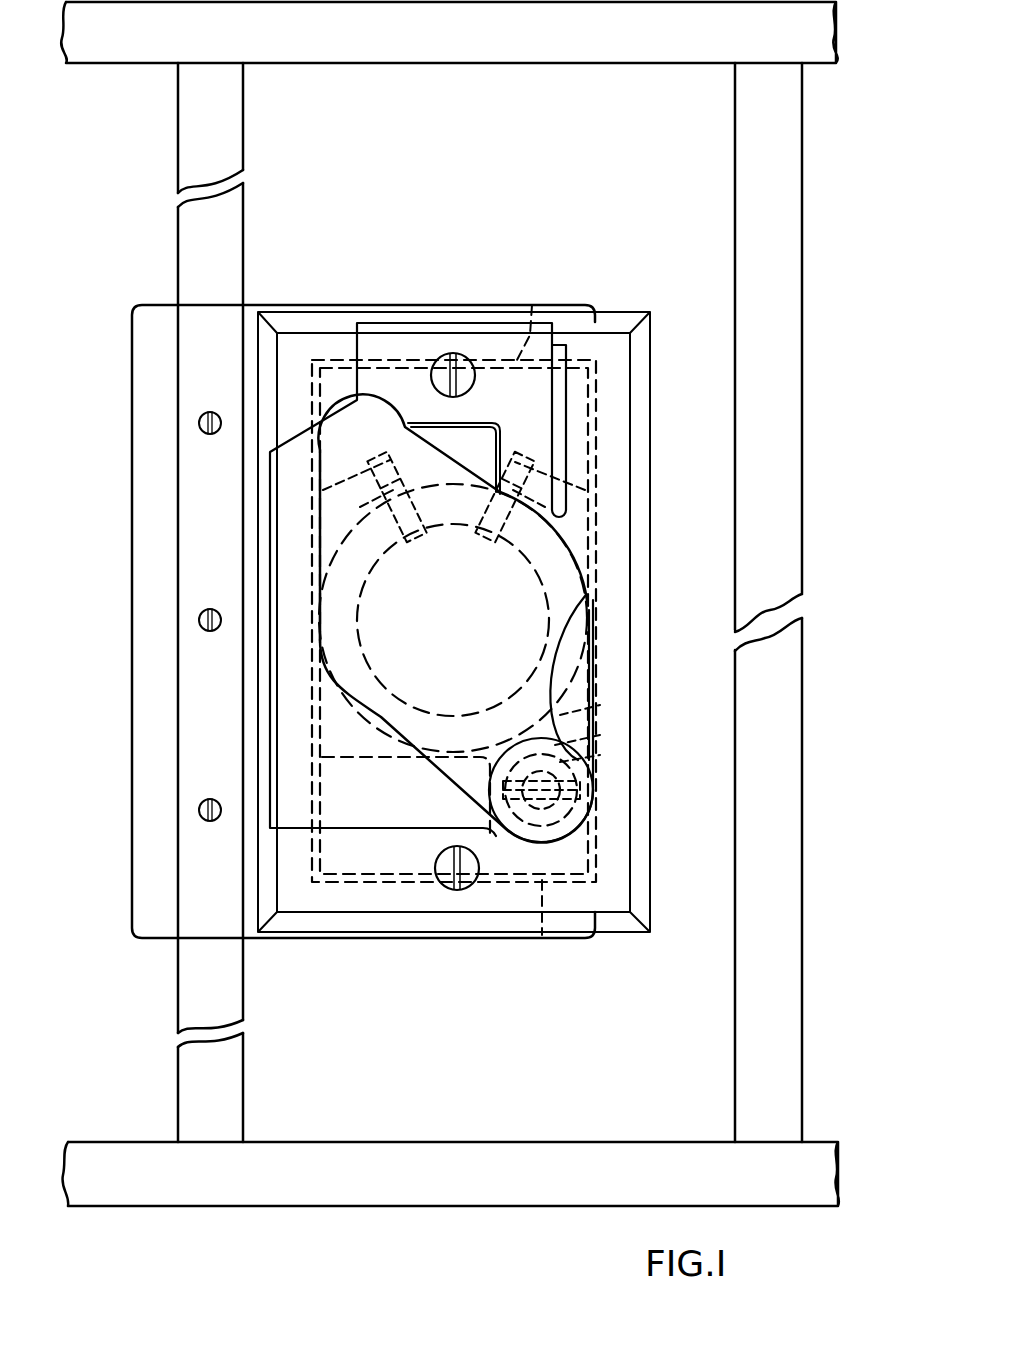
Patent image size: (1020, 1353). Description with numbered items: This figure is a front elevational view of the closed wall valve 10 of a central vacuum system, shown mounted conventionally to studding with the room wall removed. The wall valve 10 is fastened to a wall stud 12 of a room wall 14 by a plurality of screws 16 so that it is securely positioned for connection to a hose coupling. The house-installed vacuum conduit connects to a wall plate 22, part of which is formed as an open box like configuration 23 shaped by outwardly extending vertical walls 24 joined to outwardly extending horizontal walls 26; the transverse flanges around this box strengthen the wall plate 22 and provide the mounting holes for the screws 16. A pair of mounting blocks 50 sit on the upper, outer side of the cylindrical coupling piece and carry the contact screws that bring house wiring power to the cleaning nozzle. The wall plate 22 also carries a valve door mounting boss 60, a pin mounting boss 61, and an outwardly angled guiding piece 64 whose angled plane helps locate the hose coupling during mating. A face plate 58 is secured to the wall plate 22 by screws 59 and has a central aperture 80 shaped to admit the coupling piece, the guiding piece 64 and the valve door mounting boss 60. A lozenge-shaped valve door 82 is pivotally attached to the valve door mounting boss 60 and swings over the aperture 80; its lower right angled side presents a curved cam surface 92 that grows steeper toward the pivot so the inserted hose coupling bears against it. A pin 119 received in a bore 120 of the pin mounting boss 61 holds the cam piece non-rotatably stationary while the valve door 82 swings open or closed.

The wall valve 10 is at (610, 266).
The wall stud 12 is at (238, 272).
The room wall 14 is at (615, 66).
The screws 16 is at (198, 423).
The wall plate 22 is at (160, 340).
The open box like configuration 23 is at (365, 884).
The vertical walls 24 is at (318, 368).
The horizontal walls 26 is at (533, 302).
The mounting blocks 50 is at (666, 500).
The face plate 58 is at (597, 830).
The screws 59 is at (451, 352).
The valve door mounting boss 60 is at (524, 768).
The pin mounting boss 61 is at (600, 735).
The guiding piece 64 is at (490, 452).
The aperture 80 is at (580, 560).
The valve door 82 is at (432, 760).
The curved cam surface 92 is at (567, 640).
The pin 119 is at (600, 755).
The bore 120 is at (603, 703).